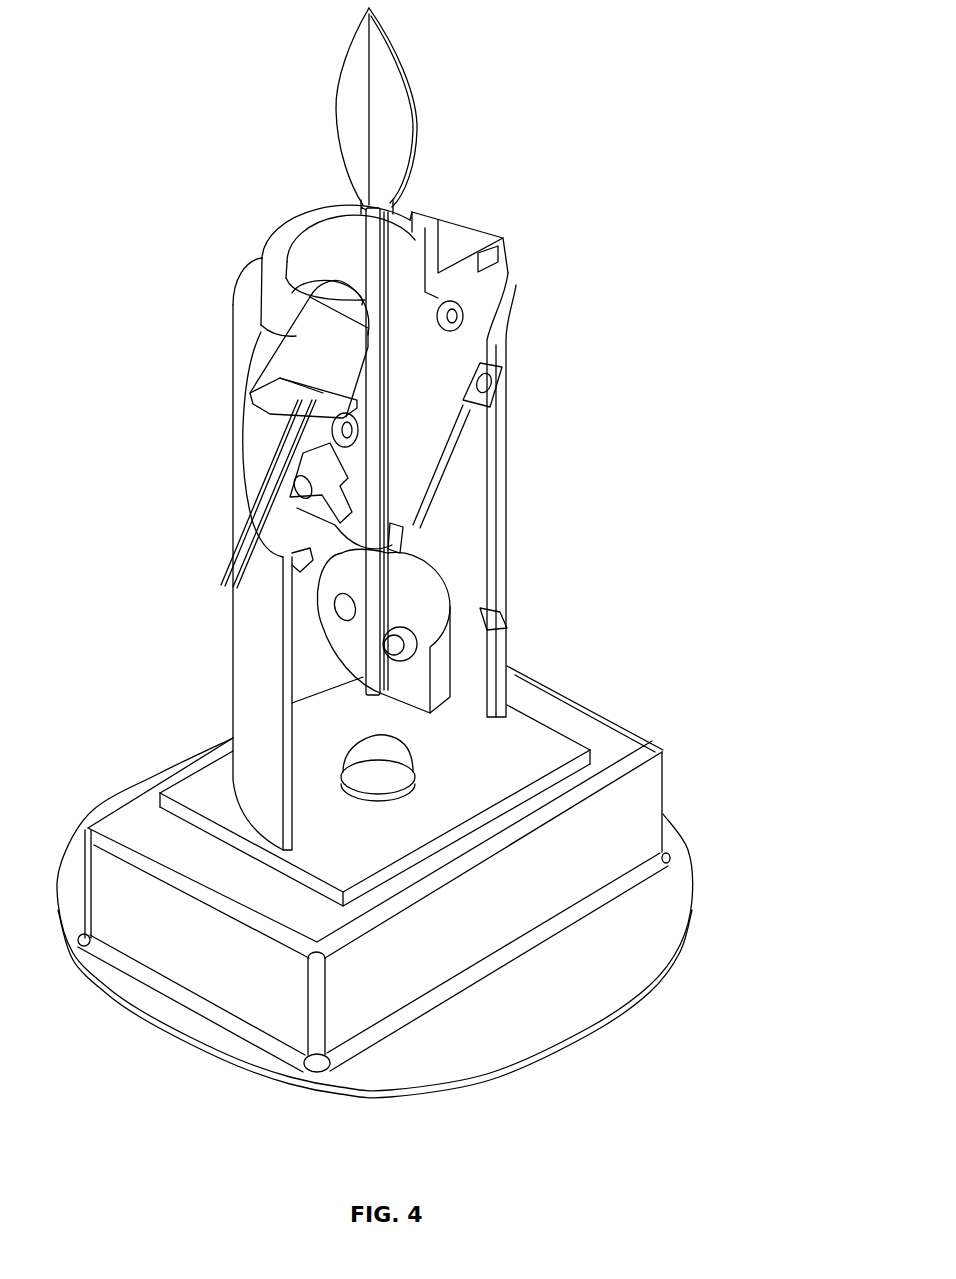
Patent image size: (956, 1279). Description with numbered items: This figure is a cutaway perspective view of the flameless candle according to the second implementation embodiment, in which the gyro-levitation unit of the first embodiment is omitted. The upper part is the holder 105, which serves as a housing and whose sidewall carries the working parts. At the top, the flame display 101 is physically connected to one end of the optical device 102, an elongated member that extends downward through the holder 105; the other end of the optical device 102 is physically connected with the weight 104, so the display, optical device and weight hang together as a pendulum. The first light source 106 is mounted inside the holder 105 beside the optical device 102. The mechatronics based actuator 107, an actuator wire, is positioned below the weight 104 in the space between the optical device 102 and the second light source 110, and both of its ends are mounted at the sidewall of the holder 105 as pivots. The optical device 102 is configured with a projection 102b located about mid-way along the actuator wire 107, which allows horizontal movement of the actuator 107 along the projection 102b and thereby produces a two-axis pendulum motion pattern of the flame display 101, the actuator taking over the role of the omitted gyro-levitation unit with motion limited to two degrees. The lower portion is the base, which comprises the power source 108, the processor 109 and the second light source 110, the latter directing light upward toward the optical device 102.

The flame display 101 is at (393, 153).
The optical device 102 is at (376, 383).
The projection 102b is at (400, 539).
The weight 104 is at (405, 605).
The holder 105 is at (258, 297).
The first light source 106 is at (320, 366).
The mechatronics based actuator 107 is at (450, 462).
The power source 108 is at (155, 813).
The processor 109 is at (213, 778).
The second light source 110 is at (385, 742).